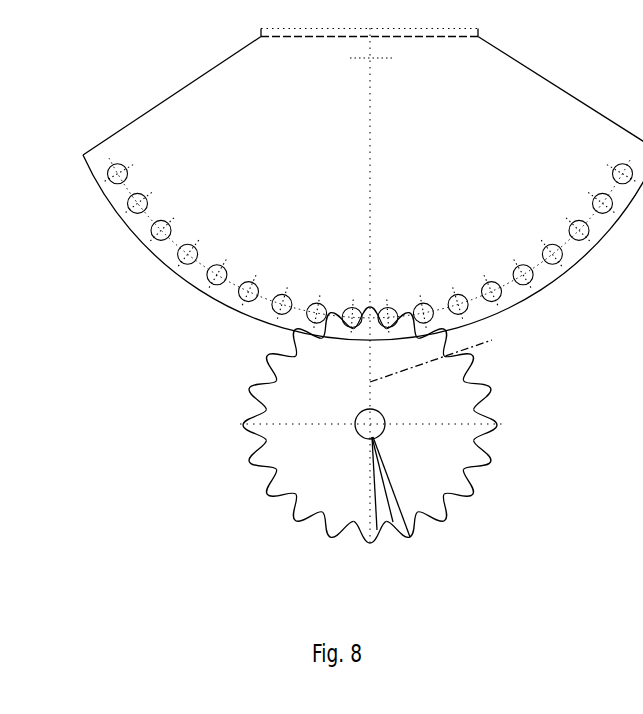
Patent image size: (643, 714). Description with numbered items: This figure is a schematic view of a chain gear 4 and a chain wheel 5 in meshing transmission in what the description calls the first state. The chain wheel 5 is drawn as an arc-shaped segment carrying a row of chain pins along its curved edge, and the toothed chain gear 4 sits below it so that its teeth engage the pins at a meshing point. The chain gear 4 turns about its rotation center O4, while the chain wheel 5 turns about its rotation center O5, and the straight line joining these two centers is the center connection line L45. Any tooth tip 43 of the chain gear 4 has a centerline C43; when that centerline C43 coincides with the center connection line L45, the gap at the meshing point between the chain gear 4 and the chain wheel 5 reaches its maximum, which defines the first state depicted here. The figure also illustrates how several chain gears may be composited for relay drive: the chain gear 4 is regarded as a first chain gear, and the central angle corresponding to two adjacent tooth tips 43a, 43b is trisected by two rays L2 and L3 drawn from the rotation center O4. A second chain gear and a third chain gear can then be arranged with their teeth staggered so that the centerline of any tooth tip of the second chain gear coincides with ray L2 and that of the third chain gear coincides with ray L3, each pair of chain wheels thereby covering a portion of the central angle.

The chain wheel 5 is at (453, 137).
The rotation center of the chain wheel O5 is at (377, 72).
The center connection line L45 is at (370, 202).
The chain gear 4 is at (397, 406).
The tooth tip 43 is at (377, 310).
The tooth tip 43a is at (365, 527).
The tooth tip 43b is at (405, 532).
The centerline of the tooth tip C43 is at (428, 398).
The rotation center of the chain gear O4 is at (381, 432).
The ray L2 is at (396, 533).
The ray L3 is at (380, 537).